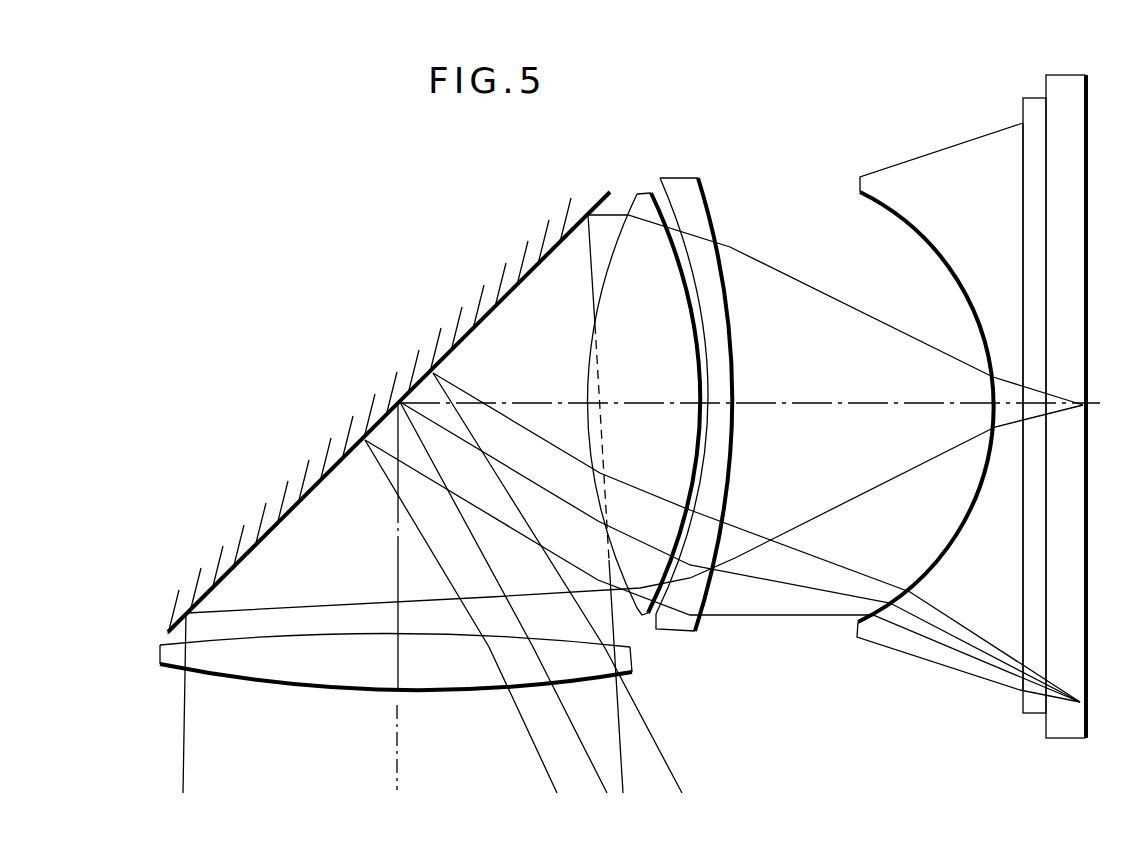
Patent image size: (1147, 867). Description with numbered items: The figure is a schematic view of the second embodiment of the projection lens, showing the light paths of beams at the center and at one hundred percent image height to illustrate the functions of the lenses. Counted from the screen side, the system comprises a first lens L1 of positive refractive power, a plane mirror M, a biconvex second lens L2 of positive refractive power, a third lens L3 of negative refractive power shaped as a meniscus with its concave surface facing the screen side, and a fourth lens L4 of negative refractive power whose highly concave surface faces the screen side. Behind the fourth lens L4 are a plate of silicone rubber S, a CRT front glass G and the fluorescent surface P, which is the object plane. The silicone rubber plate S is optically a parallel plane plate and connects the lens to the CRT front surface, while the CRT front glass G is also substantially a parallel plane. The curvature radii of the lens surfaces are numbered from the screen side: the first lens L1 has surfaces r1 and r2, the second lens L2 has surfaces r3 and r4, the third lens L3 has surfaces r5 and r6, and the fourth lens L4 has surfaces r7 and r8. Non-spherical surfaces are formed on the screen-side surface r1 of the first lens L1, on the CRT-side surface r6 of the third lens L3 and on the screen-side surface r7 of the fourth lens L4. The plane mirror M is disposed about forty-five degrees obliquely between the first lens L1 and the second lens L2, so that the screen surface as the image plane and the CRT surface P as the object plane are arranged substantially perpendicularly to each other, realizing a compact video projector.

The plane mirror M is at (484, 312).
The first lens L1 is at (399, 669).
The second lens L2 is at (644, 363).
The third lens L3 is at (696, 371).
The fourth lens L4 is at (923, 388).
The lens surface of the first lens facing the screen side r1 is at (634, 673).
The lens surface of the first lens facing the CRT side r2 is at (633, 646).
The lens surface of the second lens facing the screen side r3 is at (635, 200).
The lens surface of the second lens facing the CRT side r4 is at (668, 387).
The lens surface of the third lens facing the screen side r5 is at (672, 194).
The lens surface of the third lens facing the CRT side r6 is at (702, 190).
The lens surface of the fourth lens facing the screen side r7 is at (864, 200).
The lens surface of the fourth lens facing the CRT side r8 is at (1022, 120).
The plate of silicone rubber S is at (1036, 100).
The CRT front glass G is at (1072, 80).
The fluorescent surface P is at (1088, 165).